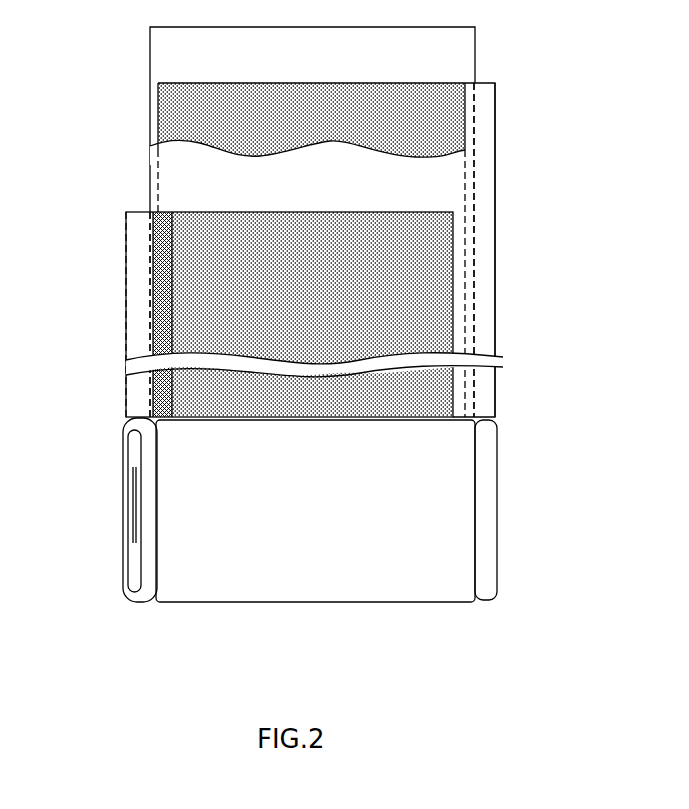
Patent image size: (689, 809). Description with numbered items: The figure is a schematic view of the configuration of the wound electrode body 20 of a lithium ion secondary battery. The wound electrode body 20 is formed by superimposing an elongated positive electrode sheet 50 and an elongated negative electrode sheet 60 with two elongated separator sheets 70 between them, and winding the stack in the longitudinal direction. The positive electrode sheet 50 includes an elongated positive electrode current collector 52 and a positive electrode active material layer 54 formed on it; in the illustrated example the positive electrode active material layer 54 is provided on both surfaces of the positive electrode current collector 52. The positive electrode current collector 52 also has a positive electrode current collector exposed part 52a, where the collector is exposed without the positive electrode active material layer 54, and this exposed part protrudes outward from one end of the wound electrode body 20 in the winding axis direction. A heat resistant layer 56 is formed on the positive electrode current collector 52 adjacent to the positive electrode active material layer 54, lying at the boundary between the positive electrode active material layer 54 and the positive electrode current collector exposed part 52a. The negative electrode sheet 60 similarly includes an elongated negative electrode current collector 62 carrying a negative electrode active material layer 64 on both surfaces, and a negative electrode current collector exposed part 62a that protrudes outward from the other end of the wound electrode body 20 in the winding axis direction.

The wound electrode body 20 is at (370, 584).
The positive electrode sheet 50 is at (228, 407).
The positive electrode current collector 52 is at (126, 352).
The positive electrode current collector exposed part 52a is at (150, 518).
The positive electrode active material layer 54 is at (200, 233).
The heat resistant layer 56 is at (160, 383).
The negative electrode sheet 60 is at (384, 338).
The negative electrode current collector 62 is at (497, 258).
The negative electrode current collector exposed part 62a is at (483, 207).
The negative electrode active material layer 64 is at (465, 107).
The separator sheet 70 is at (160, 62).